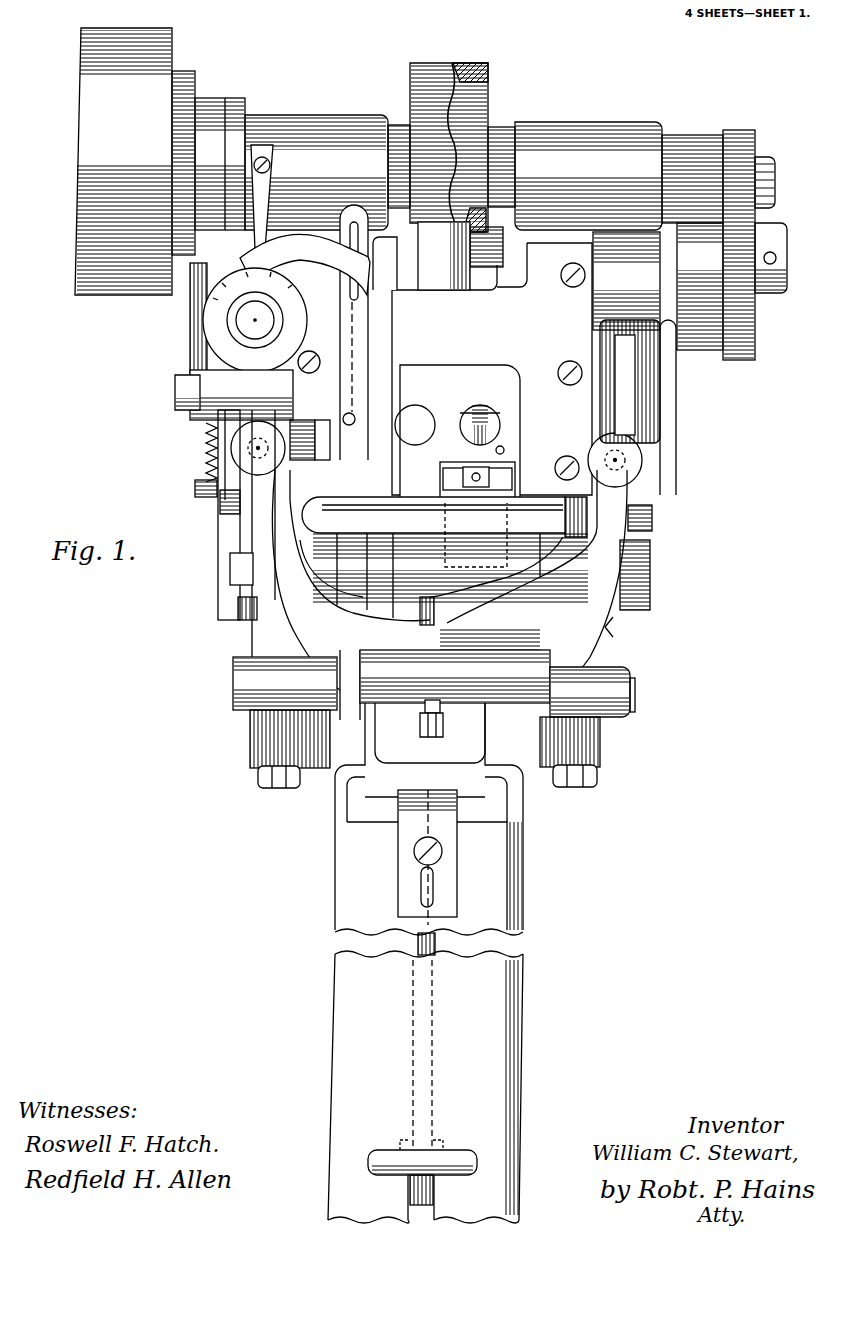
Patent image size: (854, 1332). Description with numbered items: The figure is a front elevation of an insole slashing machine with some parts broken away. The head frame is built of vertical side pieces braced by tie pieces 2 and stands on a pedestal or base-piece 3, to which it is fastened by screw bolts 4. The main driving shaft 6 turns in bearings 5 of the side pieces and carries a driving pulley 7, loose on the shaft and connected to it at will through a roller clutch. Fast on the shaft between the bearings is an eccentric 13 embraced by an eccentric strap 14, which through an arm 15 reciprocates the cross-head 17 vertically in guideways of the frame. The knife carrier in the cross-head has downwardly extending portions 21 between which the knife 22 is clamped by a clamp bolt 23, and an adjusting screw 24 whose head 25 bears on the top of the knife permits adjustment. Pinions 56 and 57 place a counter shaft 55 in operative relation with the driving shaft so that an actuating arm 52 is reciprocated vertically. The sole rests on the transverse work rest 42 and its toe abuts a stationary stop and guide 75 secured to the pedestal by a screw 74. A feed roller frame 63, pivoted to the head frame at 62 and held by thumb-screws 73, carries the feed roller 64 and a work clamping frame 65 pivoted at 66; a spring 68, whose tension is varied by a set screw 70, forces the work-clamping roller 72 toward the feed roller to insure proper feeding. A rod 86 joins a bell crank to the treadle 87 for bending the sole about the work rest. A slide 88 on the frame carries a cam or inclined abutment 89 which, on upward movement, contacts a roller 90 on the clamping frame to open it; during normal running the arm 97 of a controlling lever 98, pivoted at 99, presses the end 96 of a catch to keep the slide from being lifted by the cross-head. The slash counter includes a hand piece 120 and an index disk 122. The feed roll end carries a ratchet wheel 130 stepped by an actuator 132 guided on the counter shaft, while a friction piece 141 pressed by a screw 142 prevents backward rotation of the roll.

The tie pieces 2 is at (452, 63).
The pedestal or base-piece 3 is at (523, 898).
The screw bolts 4 is at (265, 775).
The bearings 5 is at (300, 122).
The main driving shaft 6 is at (778, 175).
The driving pulley 7 is at (134, 48).
The eccentric 13 is at (470, 110).
The eccentric strap 14 is at (486, 72).
The arm 15 is at (450, 280).
The cross-head 17 is at (513, 396).
The downwardly extending portions 21 is at (516, 472).
The knife 22 is at (505, 492).
The clamp bolt 23 is at (426, 500).
The adjusting screw 24 is at (484, 434).
The head 25 is at (484, 484).
The work rest 42 is at (610, 661).
The actuating arm 52 is at (640, 390).
The counter shaft 55 is at (497, 267).
The pinion 56 is at (748, 326).
The pinion 57 is at (738, 133).
The pivot 62 is at (636, 700).
The feed roller frame 63 is at (605, 626).
The feed roller 64 is at (495, 608).
The work clamping frame 65 is at (548, 585).
The pivot 66 is at (652, 518).
The spring 68 is at (420, 610).
The set screw 70 is at (445, 728).
The work-clamping roller 72 is at (400, 530).
The thumb-screws 73 is at (240, 449).
The screw 74 is at (414, 853).
The stationary stop and guide 75 is at (422, 727).
The rod 86 is at (437, 946).
The treadle 87 is at (475, 1145).
The slide 88 is at (362, 340).
The cam or inclined abutment 89 is at (322, 440).
The roller 90 is at (322, 428).
The end of catch 96 is at (372, 270).
The arm 97 is at (370, 300).
The controlling lever 98 is at (222, 522).
The pivot 99 is at (178, 391).
The hand piece 120 is at (248, 321).
The disk 122 is at (230, 318).
The ratchet wheel 130 is at (652, 603).
The actuator 132 is at (677, 471).
The friction piece 141 is at (232, 582).
The screw 142 is at (218, 562).